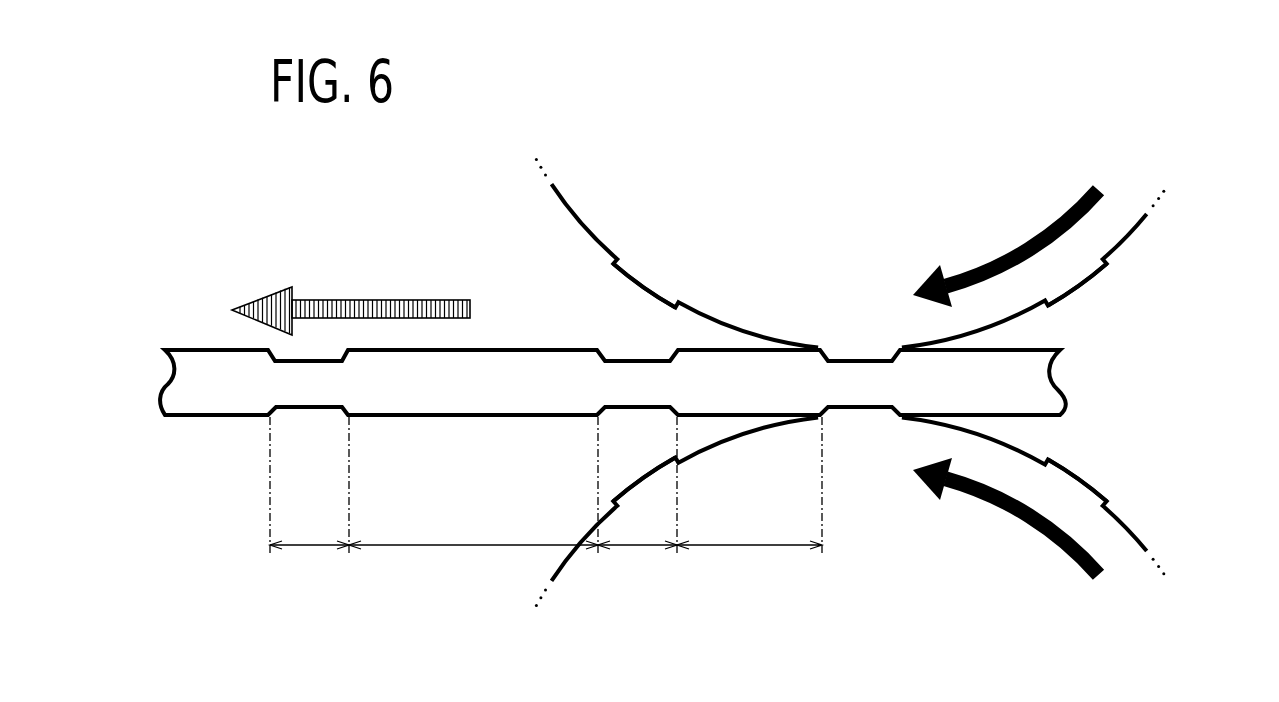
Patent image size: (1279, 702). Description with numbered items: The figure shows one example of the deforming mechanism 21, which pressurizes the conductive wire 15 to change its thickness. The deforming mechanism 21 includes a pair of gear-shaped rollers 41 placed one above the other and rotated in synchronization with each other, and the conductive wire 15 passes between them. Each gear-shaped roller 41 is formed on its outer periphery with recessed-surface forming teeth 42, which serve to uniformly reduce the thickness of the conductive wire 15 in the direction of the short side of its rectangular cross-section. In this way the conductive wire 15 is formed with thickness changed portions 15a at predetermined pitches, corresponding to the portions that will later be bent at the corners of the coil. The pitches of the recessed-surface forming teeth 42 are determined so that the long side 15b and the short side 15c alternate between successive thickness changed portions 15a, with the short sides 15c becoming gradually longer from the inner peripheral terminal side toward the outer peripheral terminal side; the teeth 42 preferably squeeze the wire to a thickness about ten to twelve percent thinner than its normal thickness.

The conductive wire 15 is at (483, 401).
The thickness changed portion 15a is at (479, 497).
The long side 15b is at (473, 561).
The short side 15c is at (749, 497).
The deforming mechanism 21 is at (904, 388).
The gear-shaped roller 41 is at (866, 213).
The recessed-surface forming teeth 42 is at (637, 281).